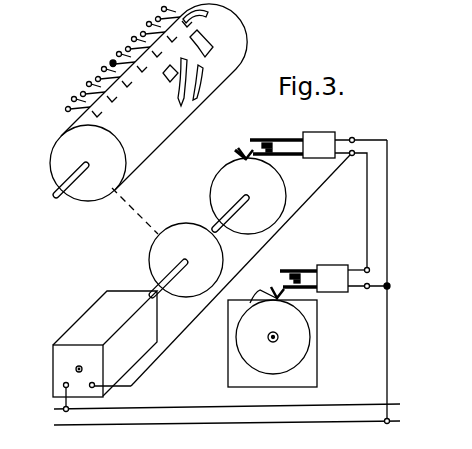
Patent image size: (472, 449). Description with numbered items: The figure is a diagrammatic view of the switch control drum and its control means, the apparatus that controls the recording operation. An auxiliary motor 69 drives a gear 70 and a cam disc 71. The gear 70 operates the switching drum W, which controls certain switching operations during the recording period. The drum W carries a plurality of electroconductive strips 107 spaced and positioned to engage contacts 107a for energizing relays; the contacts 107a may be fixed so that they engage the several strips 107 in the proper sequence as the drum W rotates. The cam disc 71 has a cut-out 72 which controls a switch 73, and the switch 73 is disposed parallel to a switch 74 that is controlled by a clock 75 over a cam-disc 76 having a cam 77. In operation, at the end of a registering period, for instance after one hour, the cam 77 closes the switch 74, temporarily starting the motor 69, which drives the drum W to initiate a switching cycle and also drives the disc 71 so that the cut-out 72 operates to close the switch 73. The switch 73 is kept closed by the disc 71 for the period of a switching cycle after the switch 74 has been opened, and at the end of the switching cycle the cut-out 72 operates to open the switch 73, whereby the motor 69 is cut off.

The switching drum W is at (244, 36).
The contacts 107a is at (75, 106).
The electroconductive strips 107 is at (152, 64).
The auxiliary motor 69 is at (75, 336).
The gear 70 is at (217, 258).
The cam disc 71 is at (281, 192).
The cut-out 72 is at (248, 163).
The switch 73 is at (322, 137).
The switch 74 is at (329, 266).
The clock 75 is at (316, 358).
The cam-disc 76 is at (310, 327).
The cam 77 is at (262, 297).